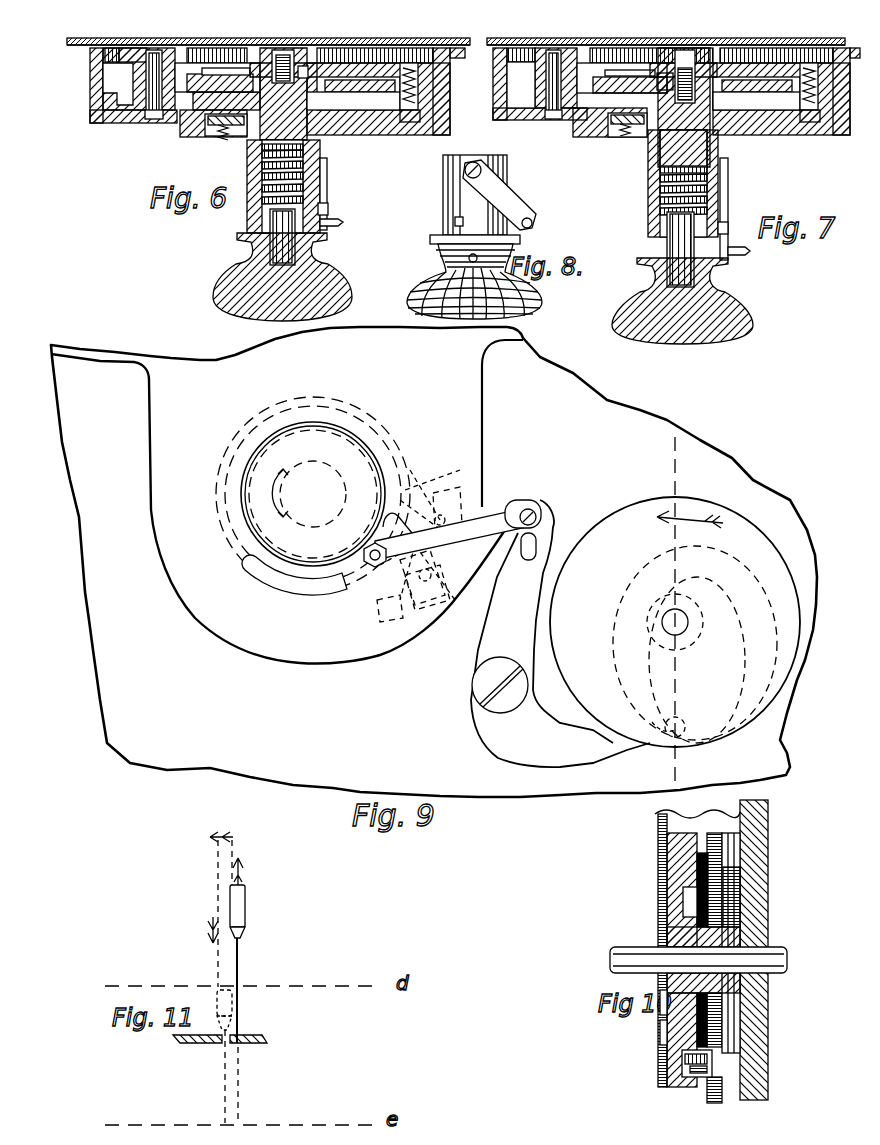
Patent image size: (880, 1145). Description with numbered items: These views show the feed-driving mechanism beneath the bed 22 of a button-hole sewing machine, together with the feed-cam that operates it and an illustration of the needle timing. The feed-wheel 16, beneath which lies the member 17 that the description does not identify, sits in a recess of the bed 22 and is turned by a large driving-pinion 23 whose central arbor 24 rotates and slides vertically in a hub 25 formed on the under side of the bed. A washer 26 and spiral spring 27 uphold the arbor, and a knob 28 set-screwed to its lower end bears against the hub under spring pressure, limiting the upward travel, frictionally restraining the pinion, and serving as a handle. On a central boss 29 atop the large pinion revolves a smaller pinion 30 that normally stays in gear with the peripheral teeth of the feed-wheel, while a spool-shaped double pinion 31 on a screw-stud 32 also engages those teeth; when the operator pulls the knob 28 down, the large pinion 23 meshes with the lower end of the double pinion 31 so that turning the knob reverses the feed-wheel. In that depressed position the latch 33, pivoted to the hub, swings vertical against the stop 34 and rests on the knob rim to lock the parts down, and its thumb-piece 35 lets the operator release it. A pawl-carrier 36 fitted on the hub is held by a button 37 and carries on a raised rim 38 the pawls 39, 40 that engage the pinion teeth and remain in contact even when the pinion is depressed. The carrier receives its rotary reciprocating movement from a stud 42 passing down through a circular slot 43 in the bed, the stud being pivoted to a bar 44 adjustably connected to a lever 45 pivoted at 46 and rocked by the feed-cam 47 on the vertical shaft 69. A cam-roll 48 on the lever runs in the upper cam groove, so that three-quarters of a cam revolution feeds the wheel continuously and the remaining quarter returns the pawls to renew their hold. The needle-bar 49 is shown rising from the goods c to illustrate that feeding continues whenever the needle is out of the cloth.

In FIG. 6, the feed-wheel 16 is at (215, 50).
In FIG. 7, the feed-wheel 16 is at (670, 36).
In FIG. 6, the cover plate 17 is at (352, 52).
In FIG. 7, the cover plate 17 is at (772, 37).
In FIG. 6, the bed 22 is at (95, 82).
In FIG. 7, the bed 22 is at (659, 104).
In FIG. 9, the bed 22 is at (768, 462).
In FIG. 10, the bed 22 is at (658, 820).
In FIG. 6, the large driving-pinion 23 is at (200, 86).
In FIG. 7, the large driving-pinion 23 is at (688, 86).
In FIG. 6, the arbor 24 is at (283, 94).
In FIG. 7, the arbor 24 is at (683, 107).
In FIG. 6, the hub 25 is at (250, 200).
In FIG. 7, the hub 25 is at (652, 180).
In FIG. 8, the hub 25 is at (452, 196).
In FIG. 6, the washer 26 is at (303, 148).
In FIG. 7, the washer 26 is at (707, 171).
In FIG. 6, the spiral spring 27 is at (300, 165).
In FIG. 7, the spiral spring 27 is at (665, 192).
In FIG. 6, the knob 28 is at (225, 293).
In FIG. 7, the knob 28 is at (745, 322).
In FIG. 8, the knob 28 is at (474, 277).
In FIG. 9, the knob 28 is at (313, 494).
In FIG. 6, the central boss 29 is at (300, 70).
In FIG. 7, the central boss 29 is at (647, 78).
In FIG. 6, the smaller pinion 30 is at (262, 62).
In FIG. 7, the smaller pinion 30 is at (690, 57).
In FIG. 6, the spool-shaped double pinion 31 is at (140, 78).
In FIG. 7, the spool-shaped double pinion 31 is at (523, 85).
In FIG. 6, the screw-stud 32 is at (150, 114).
In FIG. 7, the screw-stud 32 is at (532, 100).
In FIG. 6, the latch 33 is at (327, 190).
In FIG. 7, the latch 33 is at (728, 190).
In FIG. 8, the latch 33 is at (505, 193).
In FIG. 6, the stop 34 is at (332, 207).
In FIG. 7, the stop 34 is at (735, 221).
In FIG. 8, the stop 34 is at (455, 222).
In FIG. 6, the thumb-piece 35 is at (338, 228).
In FIG. 7, the thumb-piece 35 is at (750, 252).
In FIG. 8, the thumb-piece 35 is at (533, 223).
In FIG. 6, the pawl-carrier 36 is at (353, 99).
In FIG. 7, the pawl-carrier 36 is at (756, 123).
In FIG. 9, the pawl-carrier 36 is at (313, 518).
In FIG. 6, the button 37 is at (228, 118).
In FIG. 7, the button 37 is at (618, 139).
In FIG. 6, the raised rim 38 is at (412, 114).
In FIG. 7, the raised rim 38 is at (811, 139).
In FIG. 9, the raised rim 38 is at (415, 604).
In FIG. 6, the pawl 39 is at (418, 68).
In FIG. 7, the pawl 39 is at (787, 86).
In FIG. 9, the pawl 39 is at (378, 608).
In FIG. 9, the pawl 40 is at (442, 566).
In FIG. 9, the stud 42 is at (373, 569).
In FIG. 9, the circular slot 43 is at (300, 592).
In FIG. 9, the bar 44 is at (458, 513).
In FIG. 9, the lever 45 is at (560, 633).
In FIG. 10, the lever 45 is at (721, 981).
In FIG. 9, the pivot 46 is at (500, 685).
In FIG. 10, the pivot 46 is at (663, 1035).
In FIG. 9, the feed-cam 47 is at (675, 622).
In FIG. 10, the feed-cam 47 is at (667, 868).
In FIG. 9, the cam-roll 48 is at (686, 727).
In FIG. 10, the cam-roll 48 is at (700, 1083).
In FIG. 11, the needle-bar 49 is at (246, 910).
In FIG. 9, the vertical shaft 69 is at (683, 618).
In FIG. 10, the vertical shaft 69 is at (610, 962).
In FIG. 11, the goods c is at (268, 1038).